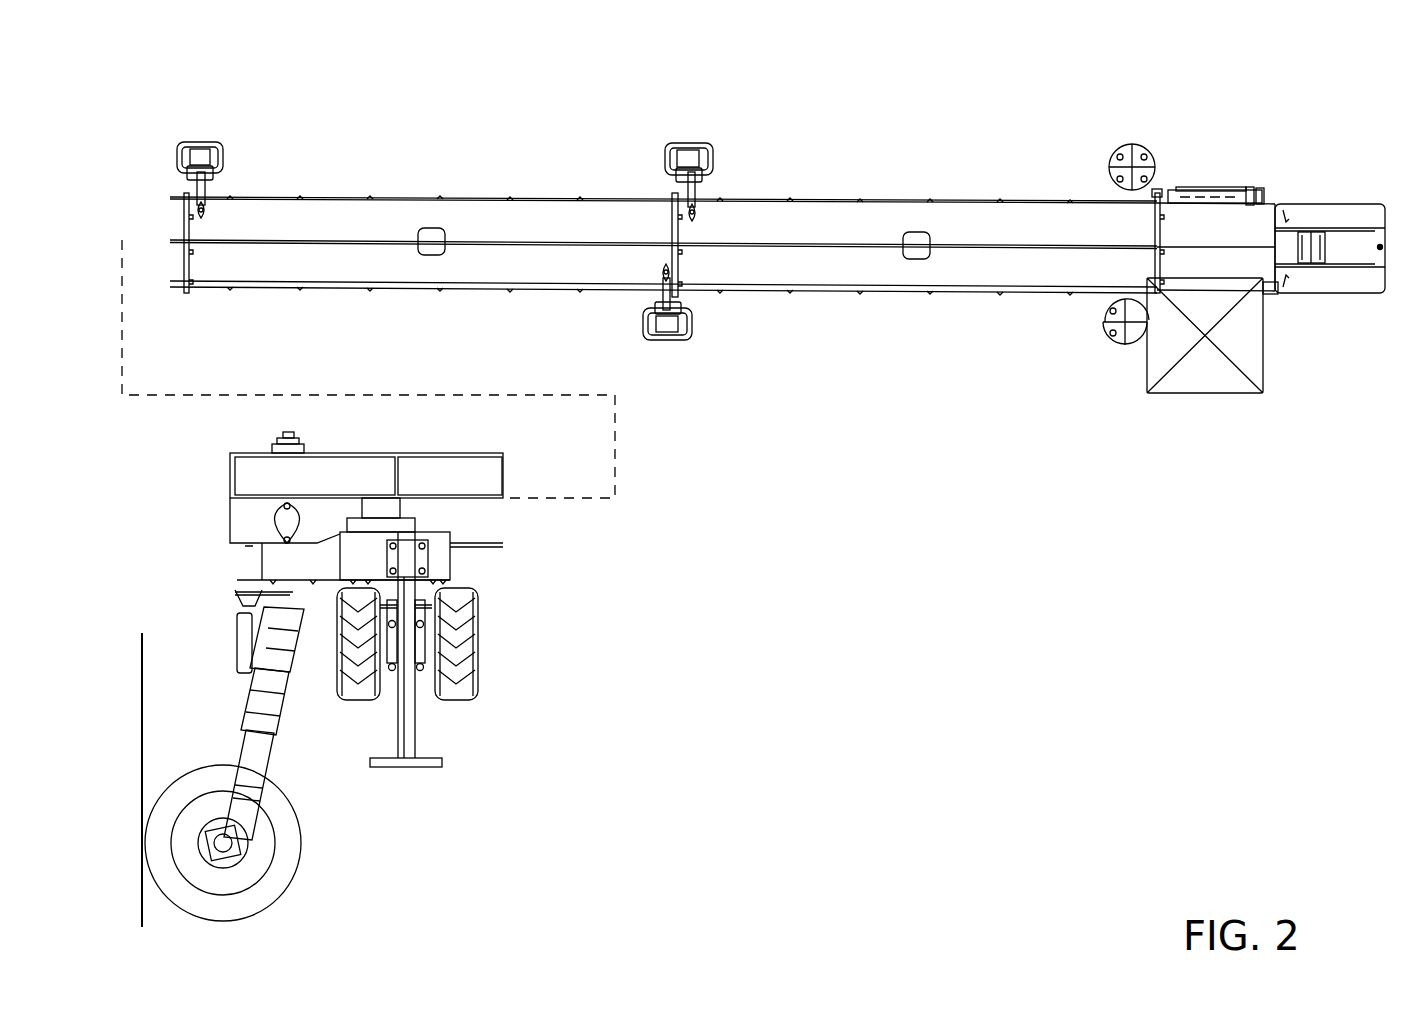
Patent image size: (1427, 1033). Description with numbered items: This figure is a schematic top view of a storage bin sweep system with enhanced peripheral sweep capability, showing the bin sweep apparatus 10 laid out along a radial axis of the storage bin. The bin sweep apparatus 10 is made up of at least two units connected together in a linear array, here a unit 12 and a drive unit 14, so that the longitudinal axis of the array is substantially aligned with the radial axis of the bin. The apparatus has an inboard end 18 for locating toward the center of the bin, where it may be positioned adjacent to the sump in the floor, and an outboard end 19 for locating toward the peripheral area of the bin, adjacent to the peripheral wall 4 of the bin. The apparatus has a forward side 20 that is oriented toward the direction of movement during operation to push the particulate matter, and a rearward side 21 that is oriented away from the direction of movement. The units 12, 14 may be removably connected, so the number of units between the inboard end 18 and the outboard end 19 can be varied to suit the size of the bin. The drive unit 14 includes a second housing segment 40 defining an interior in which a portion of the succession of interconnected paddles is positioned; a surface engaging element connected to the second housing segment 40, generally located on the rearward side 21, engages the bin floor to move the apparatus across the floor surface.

The bin sweep apparatus 10 is at (1320, 77).
The unit 12 is at (1214, 163).
The drive unit 14 is at (486, 443).
The inboard end 18 is at (1375, 336).
The outboard end 19 is at (202, 521).
The forward side 20 is at (806, 162).
The rearward side 21 is at (823, 350).
The second housing segment 40 is at (318, 474).
The peripheral wall 4 is at (145, 720).